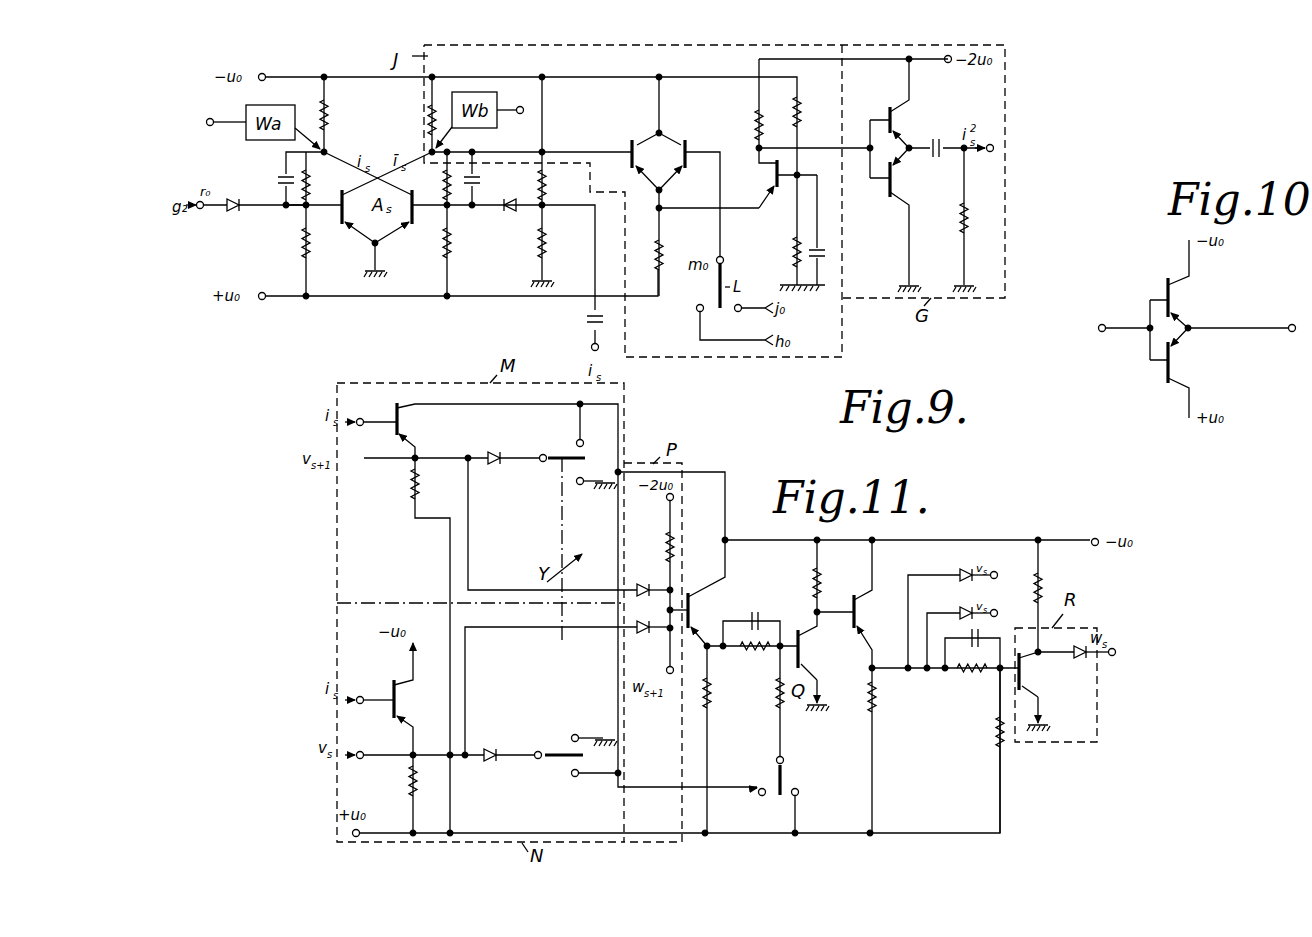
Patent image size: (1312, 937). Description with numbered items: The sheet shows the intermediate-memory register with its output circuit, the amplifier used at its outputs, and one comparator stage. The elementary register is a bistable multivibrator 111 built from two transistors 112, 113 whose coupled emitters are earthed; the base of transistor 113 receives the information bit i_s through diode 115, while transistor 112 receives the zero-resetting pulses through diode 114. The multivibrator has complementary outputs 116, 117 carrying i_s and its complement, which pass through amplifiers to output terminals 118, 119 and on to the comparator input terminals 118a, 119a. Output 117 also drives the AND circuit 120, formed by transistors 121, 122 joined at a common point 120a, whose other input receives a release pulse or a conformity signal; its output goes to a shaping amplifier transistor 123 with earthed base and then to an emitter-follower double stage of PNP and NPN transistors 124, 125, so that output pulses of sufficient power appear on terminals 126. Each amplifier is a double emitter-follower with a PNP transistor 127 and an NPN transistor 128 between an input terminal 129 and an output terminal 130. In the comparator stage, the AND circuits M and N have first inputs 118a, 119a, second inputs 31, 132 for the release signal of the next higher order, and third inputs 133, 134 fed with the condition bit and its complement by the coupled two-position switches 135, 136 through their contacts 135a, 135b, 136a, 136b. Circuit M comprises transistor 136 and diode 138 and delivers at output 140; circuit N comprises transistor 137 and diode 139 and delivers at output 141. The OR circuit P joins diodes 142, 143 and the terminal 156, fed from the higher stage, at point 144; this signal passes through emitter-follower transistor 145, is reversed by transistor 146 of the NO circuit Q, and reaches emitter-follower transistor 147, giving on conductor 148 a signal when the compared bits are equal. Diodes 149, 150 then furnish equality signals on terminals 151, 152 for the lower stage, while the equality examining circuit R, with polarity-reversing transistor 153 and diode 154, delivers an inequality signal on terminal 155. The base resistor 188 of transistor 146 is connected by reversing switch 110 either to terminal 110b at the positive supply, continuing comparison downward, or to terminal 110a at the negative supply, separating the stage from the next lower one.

In FIG. 9, the bistable multivibrator 111 is at (387, 228).
In FIG. 9, the transistor 112 is at (338, 214).
In FIG. 9, the transistor 113 is at (385, 197).
In FIG. 9, the diode 114 is at (255, 191).
In FIG. 9, the diode 115 is at (513, 190).
In FIG. 9, the output 116 is at (326, 116).
In FIG. 9, the output 117 is at (422, 116).
In FIG. 9, the output terminal 118 is at (219, 113).
In FIG. 9, the output terminal 119 is at (515, 100).
In FIG. 9, the AND circuit 120 is at (665, 140).
In FIG. 9, the emitter resistor 120a is at (707, 243).
In FIG. 9, the transistor 121 is at (628, 163).
In FIG. 9, the transistor 122 is at (689, 198).
In FIG. 9, the transistor 123 is at (780, 171).
In FIG. 9, the transistor 124 is at (886, 112).
In FIG. 9, the transistor 125 is at (886, 200).
In FIG. 9, the terminals 126 is at (971, 218).
In FIG. 10, the PNP transistor 127 is at (1163, 283).
In FIG. 10, the NPN transistor 128 is at (1163, 377).
In FIG. 10, the input terminal 129 is at (1100, 333).
In FIG. 10, the output terminal 130 is at (1291, 333).
In FIG. 11, the second input 31 is at (370, 435).
In FIG. 11, the input terminal 118a is at (357, 412).
In FIG. 11, the input terminal 119a is at (365, 710).
In FIG. 11, the second input 132 is at (348, 765).
In FIG. 11, the third input 133 is at (552, 474).
In FIG. 11, the third input 134 is at (537, 750).
In FIG. 11, the coupled switch 135 is at (553, 448).
In FIG. 11, the switch contact 135a is at (600, 423).
In FIG. 11, the switch contact 135b is at (591, 493).
In FIG. 11, the coupled switch / transistor 136 is at (396, 407).
In FIG. 11, the switch contact 136a is at (575, 777).
In FIG. 11, the switch contact 136b is at (595, 727).
In FIG. 11, the transistor 137 is at (392, 683).
In FIG. 11, the diode 138 is at (492, 451).
In FIG. 11, the diode 139 is at (488, 748).
In FIG. 11, the output 140 is at (627, 590).
In FIG. 11, the output 141 is at (640, 633).
In FIG. 11, the diode 142 is at (632, 580).
In FIG. 11, the diode 143 is at (668, 666).
In FIG. 11, the point 144 is at (664, 610).
In FIG. 11, the transistor 145 is at (672, 559).
In FIG. 11, the transistor 146 is at (799, 630).
In FIG. 11, the transistor 147 is at (853, 638).
In FIG. 11, the conductor 148 is at (878, 673).
In FIG. 11, the diode 149 is at (944, 608).
In FIG. 11, the diode 150 is at (955, 627).
In FIG. 11, the terminal 151 is at (996, 571).
In FIG. 11, the terminal 152 is at (996, 609).
In FIG. 11, the polarity reversing transistor 153 is at (1036, 635).
In FIG. 11, the diode 154 is at (1074, 650).
In FIG. 11, the terminal 155 is at (1118, 653).
In FIG. 11, the terminal 156 is at (695, 738).
In FIG. 11, the base resistor 188 is at (774, 692).
In FIG. 11, the reversing switch 110 is at (797, 773).
In FIG. 11, the terminal 110a is at (759, 803).
In FIG. 11, the terminal 110b is at (817, 808).